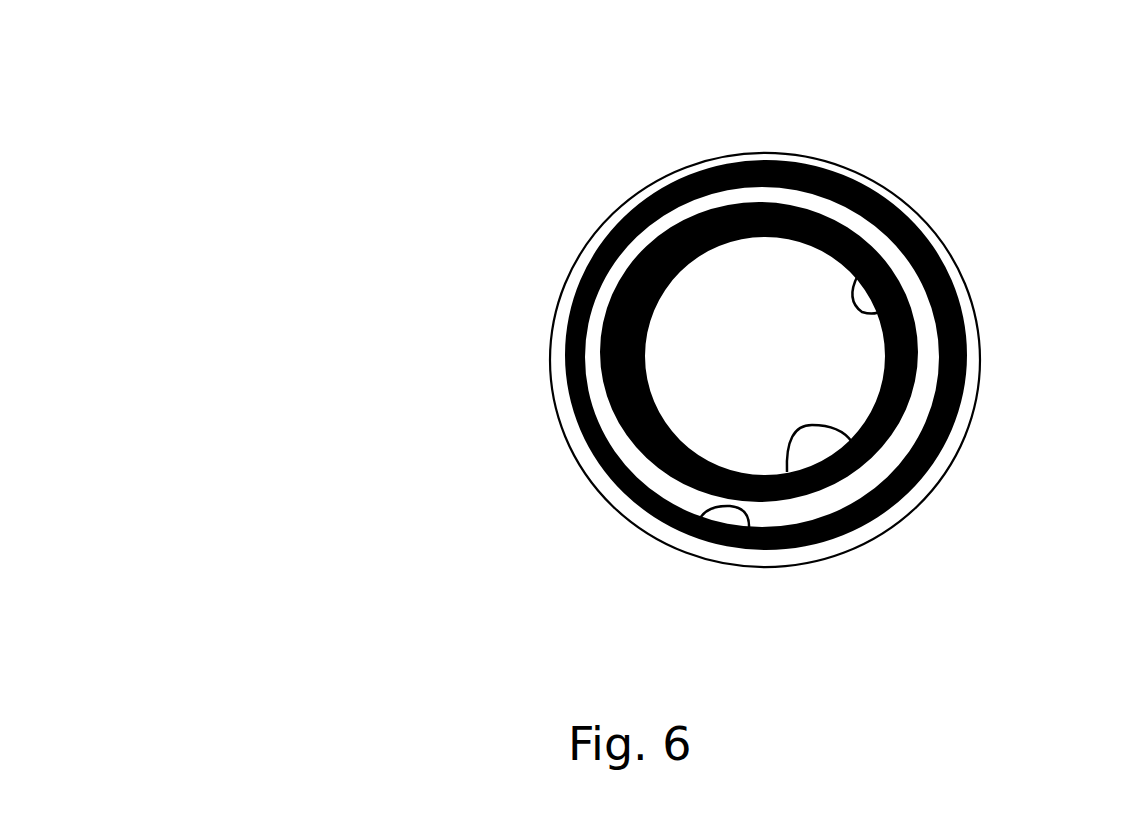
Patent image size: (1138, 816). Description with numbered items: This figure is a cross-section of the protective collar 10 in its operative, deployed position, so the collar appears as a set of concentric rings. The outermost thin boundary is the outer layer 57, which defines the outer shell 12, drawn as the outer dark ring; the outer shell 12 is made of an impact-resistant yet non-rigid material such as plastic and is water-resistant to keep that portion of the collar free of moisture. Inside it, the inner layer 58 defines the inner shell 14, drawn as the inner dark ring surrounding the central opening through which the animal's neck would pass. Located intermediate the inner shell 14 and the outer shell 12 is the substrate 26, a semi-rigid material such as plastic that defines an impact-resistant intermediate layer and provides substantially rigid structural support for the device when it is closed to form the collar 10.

The protective collar 10 is at (648, 373).
The outer shell 12 is at (705, 168).
The inner shell 14 is at (787, 472).
The substrate 26 is at (700, 522).
The outer layer 57 is at (962, 435).
The inner layer 58 is at (905, 292).